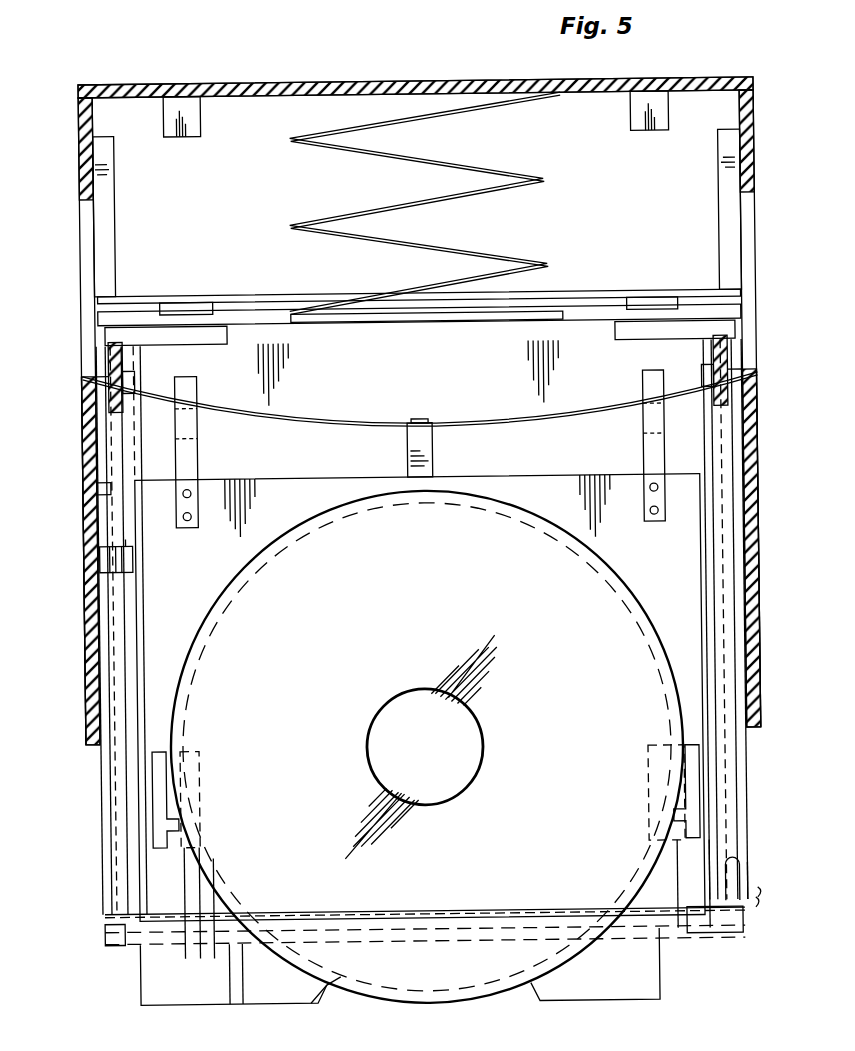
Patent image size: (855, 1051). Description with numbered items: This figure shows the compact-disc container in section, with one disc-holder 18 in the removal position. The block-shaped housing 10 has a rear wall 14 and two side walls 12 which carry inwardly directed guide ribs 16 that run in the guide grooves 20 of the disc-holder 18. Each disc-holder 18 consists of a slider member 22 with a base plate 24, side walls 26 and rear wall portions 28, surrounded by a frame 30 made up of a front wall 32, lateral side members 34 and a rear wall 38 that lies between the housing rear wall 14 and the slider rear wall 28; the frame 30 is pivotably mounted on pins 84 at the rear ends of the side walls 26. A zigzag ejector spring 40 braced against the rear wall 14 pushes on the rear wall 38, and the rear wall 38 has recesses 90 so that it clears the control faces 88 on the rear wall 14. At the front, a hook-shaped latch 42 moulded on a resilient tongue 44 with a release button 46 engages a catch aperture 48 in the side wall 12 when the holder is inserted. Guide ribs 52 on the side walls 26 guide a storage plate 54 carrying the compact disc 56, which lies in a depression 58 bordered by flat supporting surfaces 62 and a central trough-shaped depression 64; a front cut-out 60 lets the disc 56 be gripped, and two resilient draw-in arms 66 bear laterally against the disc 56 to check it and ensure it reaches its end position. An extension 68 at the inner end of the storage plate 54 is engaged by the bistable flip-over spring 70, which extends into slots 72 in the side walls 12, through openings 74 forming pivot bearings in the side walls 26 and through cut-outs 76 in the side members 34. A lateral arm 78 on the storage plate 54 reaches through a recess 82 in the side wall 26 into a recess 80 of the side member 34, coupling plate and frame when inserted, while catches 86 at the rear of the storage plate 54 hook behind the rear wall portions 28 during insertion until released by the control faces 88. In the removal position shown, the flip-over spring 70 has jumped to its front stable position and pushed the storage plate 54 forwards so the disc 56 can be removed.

The housing 10 is at (124, 82).
The side wall 12 is at (753, 420).
The rear wall 14 is at (258, 85).
The guide rib 16 is at (113, 222).
The disc-holder 18 is at (133, 969).
The guide groove 20 is at (115, 872).
The slider member 22 is at (590, 312).
The base plate 24 is at (300, 325).
The side wall 26 is at (105, 640).
The rear wall portion 28 is at (205, 346).
The frame 30 is at (100, 795).
The front wall 32 is at (110, 950).
The lateral side member 34 is at (100, 830).
The rear wall 38 is at (240, 297).
The ejector spring 40 is at (480, 168).
The latch 42 is at (752, 904).
The resilient tongue 44 is at (740, 882).
The release button 46 is at (722, 940).
The catch aperture 48 is at (753, 706).
The guide rib 52 is at (180, 461).
The storage plate 54 is at (155, 687).
The compact disc 56 is at (605, 602).
The depression 58 is at (280, 1006).
The cut-out 60 is at (312, 984).
The supporting surface 62 is at (176, 860).
The trough-shaped depression 64 is at (230, 1006).
The draw-in arm 66 is at (165, 786).
The extension 68 is at (428, 472).
The flip-over spring 70 is at (345, 430).
The slot 72 is at (78, 223).
The opening 74 is at (131, 386).
The cut-out 76 is at (80, 392).
The lateral arm 78 is at (95, 566).
The recess 80 is at (92, 461).
The recess 82 is at (120, 542).
The pin 84 is at (105, 356).
The catch 86 is at (193, 476).
The control face 88 is at (195, 139).
The recess 90 is at (178, 304).